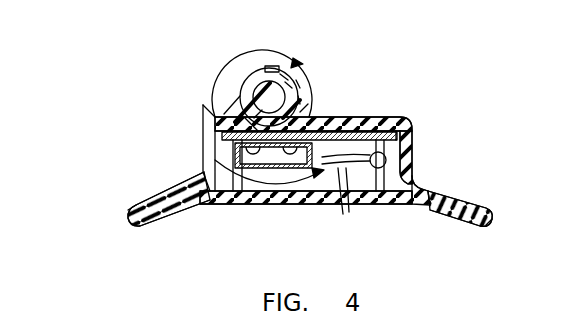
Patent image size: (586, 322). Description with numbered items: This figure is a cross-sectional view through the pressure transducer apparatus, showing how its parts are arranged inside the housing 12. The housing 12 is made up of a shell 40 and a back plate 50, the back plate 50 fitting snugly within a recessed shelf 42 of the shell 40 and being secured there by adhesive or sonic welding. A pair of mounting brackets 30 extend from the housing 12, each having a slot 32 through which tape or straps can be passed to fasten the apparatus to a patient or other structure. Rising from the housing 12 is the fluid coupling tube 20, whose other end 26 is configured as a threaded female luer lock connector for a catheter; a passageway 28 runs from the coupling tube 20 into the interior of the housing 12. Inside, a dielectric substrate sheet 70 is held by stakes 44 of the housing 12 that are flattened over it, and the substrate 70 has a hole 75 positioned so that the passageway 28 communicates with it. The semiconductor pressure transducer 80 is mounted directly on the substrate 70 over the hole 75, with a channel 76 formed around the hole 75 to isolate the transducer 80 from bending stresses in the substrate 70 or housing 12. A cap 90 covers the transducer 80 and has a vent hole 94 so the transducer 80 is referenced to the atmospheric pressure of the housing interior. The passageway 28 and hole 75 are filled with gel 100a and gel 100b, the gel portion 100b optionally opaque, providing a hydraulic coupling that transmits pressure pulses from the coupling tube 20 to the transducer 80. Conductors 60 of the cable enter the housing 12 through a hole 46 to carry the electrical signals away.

The housing 12 is at (404, 111).
The fluid coupling tube 20 is at (255, 93).
The other end of coupling tube 26 is at (262, 70).
The passageway 28 is at (240, 100).
The mounting brackets 30 is at (490, 215).
The slots 32 is at (458, 207).
The shell 40 is at (414, 163).
The recessed shelf 42 is at (426, 207).
The stakes 44 is at (403, 150).
The hole 46 is at (383, 170).
The back plate 50 is at (300, 207).
The conductors 60 is at (343, 214).
The dielectric substrate sheet 70 is at (415, 132).
The hole 75 is at (245, 118).
The channel 76 is at (362, 114).
The semiconductor pressure transducer 80 is at (242, 175).
The cap 90 is at (233, 175).
The vent hole 94 is at (352, 131).
The gel 100a is at (303, 84).
The gel portion 100b is at (303, 100).